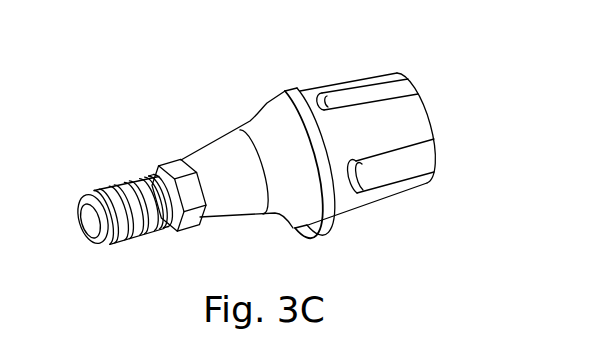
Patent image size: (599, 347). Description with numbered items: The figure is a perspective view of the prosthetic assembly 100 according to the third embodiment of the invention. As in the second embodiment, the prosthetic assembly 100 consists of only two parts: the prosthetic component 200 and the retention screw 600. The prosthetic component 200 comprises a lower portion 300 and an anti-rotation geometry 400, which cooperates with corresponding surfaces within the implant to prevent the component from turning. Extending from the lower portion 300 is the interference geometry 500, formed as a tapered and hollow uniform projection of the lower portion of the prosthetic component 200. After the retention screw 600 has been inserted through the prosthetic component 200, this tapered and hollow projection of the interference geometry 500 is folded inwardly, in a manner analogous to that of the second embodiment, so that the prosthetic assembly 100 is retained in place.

The prosthetic assembly 100 is at (260, 147).
The prosthetic component 200 is at (340, 193).
The lower portion 300 is at (240, 200).
The anti-rotation geometry 400 is at (192, 217).
The interference geometry 500 is at (175, 215).
The retention screw 600 is at (97, 236).